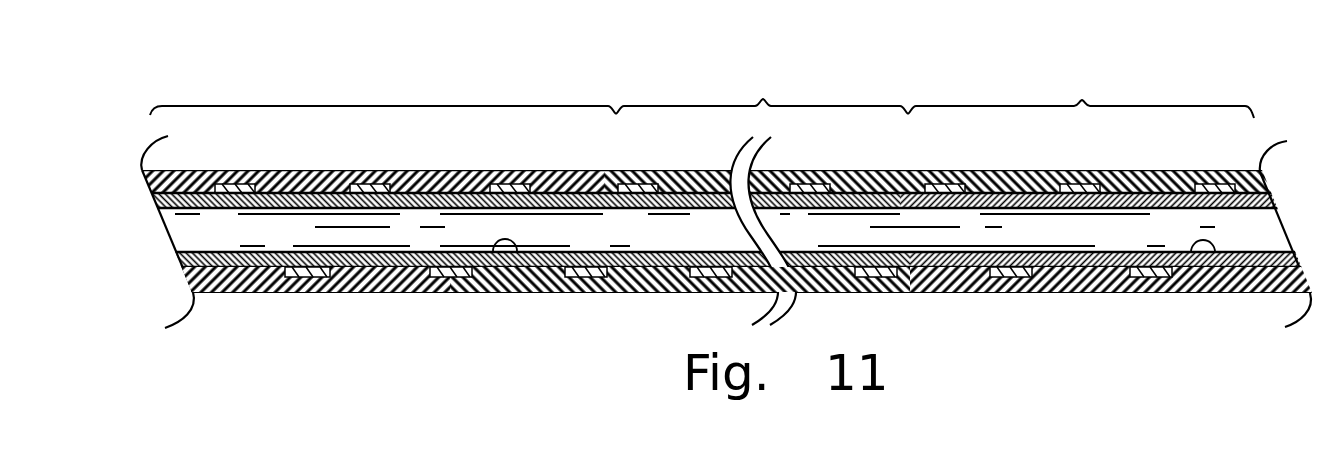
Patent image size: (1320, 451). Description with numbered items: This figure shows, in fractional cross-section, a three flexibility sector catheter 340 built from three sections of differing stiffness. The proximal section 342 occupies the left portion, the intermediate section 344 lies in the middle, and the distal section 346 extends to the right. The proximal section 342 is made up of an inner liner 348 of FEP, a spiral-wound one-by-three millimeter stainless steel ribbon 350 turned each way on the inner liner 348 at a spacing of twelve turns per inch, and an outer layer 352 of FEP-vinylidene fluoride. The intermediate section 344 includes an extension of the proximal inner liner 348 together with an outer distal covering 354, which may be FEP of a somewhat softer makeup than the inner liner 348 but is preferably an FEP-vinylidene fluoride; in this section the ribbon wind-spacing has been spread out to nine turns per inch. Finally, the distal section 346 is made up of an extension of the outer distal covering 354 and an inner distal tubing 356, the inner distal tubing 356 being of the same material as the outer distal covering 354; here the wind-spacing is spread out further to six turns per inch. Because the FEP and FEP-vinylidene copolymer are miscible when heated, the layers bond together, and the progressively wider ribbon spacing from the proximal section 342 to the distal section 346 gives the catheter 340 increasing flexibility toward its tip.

The three flexibility sector catheter 340 is at (1000, 58).
The proximal section 342 is at (383, 93).
The intermediate section 344 is at (762, 93).
The distal section 346 is at (1081, 95).
The inner liner 348 is at (505, 264).
The spiral-wound stainless steel ribbon 350 is at (312, 270).
The outer layer 352 is at (387, 268).
The outer distal covering 354 is at (1080, 296).
The inner distal tubing 356 is at (1208, 266).